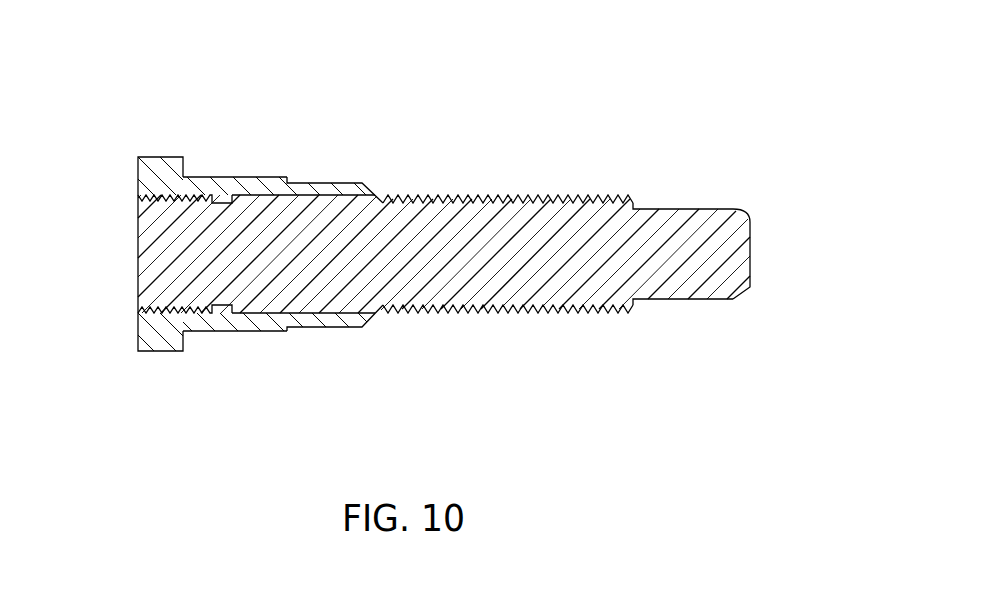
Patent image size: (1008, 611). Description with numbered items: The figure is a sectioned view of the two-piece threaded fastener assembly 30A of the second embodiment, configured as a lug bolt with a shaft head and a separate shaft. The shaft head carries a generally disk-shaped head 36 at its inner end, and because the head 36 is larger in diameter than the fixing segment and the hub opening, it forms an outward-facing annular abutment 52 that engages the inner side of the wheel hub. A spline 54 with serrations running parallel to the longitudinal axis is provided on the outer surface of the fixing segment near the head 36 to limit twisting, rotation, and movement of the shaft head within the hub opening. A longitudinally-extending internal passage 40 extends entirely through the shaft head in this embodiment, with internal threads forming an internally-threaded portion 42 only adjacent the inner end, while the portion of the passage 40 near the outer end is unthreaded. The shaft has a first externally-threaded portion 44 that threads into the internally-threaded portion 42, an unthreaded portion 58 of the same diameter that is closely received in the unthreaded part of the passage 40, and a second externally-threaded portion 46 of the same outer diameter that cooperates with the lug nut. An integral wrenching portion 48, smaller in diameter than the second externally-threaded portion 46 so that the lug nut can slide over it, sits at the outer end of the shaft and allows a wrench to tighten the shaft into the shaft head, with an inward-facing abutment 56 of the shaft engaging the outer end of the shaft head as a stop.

The threaded fastener assembly 30A is at (751, 108).
The head 36 is at (138, 330).
The internal passage 40 is at (250, 313).
The internally-threaded portion 42 is at (150, 299).
The first externally-threaded portion 44 is at (180, 188).
The second externally-threaded portion 46 is at (573, 197).
The wrenching portion 48 is at (692, 298).
The abutment 52 is at (187, 347).
The spline 54 is at (213, 177).
The abutment 56 is at (353, 183).
The unthreaded portion 58 is at (313, 318).